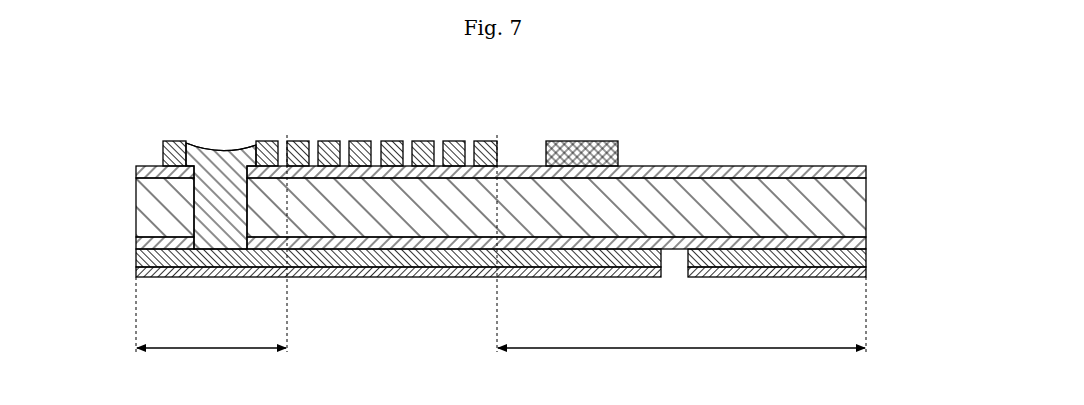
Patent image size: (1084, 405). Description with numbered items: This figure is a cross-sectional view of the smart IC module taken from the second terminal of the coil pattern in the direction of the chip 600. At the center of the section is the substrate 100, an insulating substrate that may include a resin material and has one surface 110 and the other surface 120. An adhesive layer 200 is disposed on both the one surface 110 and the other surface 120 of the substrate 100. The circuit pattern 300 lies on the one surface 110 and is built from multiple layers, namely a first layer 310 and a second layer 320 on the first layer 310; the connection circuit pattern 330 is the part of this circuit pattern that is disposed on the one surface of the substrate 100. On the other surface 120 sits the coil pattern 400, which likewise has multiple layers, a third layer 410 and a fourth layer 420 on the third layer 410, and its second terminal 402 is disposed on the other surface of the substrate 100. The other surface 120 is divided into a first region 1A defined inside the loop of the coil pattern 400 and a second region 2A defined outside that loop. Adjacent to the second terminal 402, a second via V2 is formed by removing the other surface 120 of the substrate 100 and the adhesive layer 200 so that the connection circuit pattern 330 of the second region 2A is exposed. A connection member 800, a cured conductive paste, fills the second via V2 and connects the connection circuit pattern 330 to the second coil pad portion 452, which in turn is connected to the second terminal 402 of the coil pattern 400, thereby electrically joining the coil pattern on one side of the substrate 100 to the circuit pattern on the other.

The substrate 100 is at (867, 207).
The one surface 110 is at (774, 240).
The other surface 120 is at (766, 176).
The adhesive layer 200 is at (867, 168).
The circuit pattern 300 is at (930, 255).
The first layer 310 is at (867, 257).
The second layer 320 is at (867, 270).
The connection circuit pattern 330 is at (78, 258).
The coil pattern 400 is at (483, 79).
The second terminal 402 is at (103, 118).
The third layer 410 is at (160, 156).
The fourth layer 420 is at (158, 142).
The second coil pad portion 452 is at (234, 147).
The chip 600 is at (633, 150).
The connection member 800 is at (222, 238).
The second via V2 is at (229, 126).
The first region 1A is at (681, 252).
The second region 2A is at (211, 252).